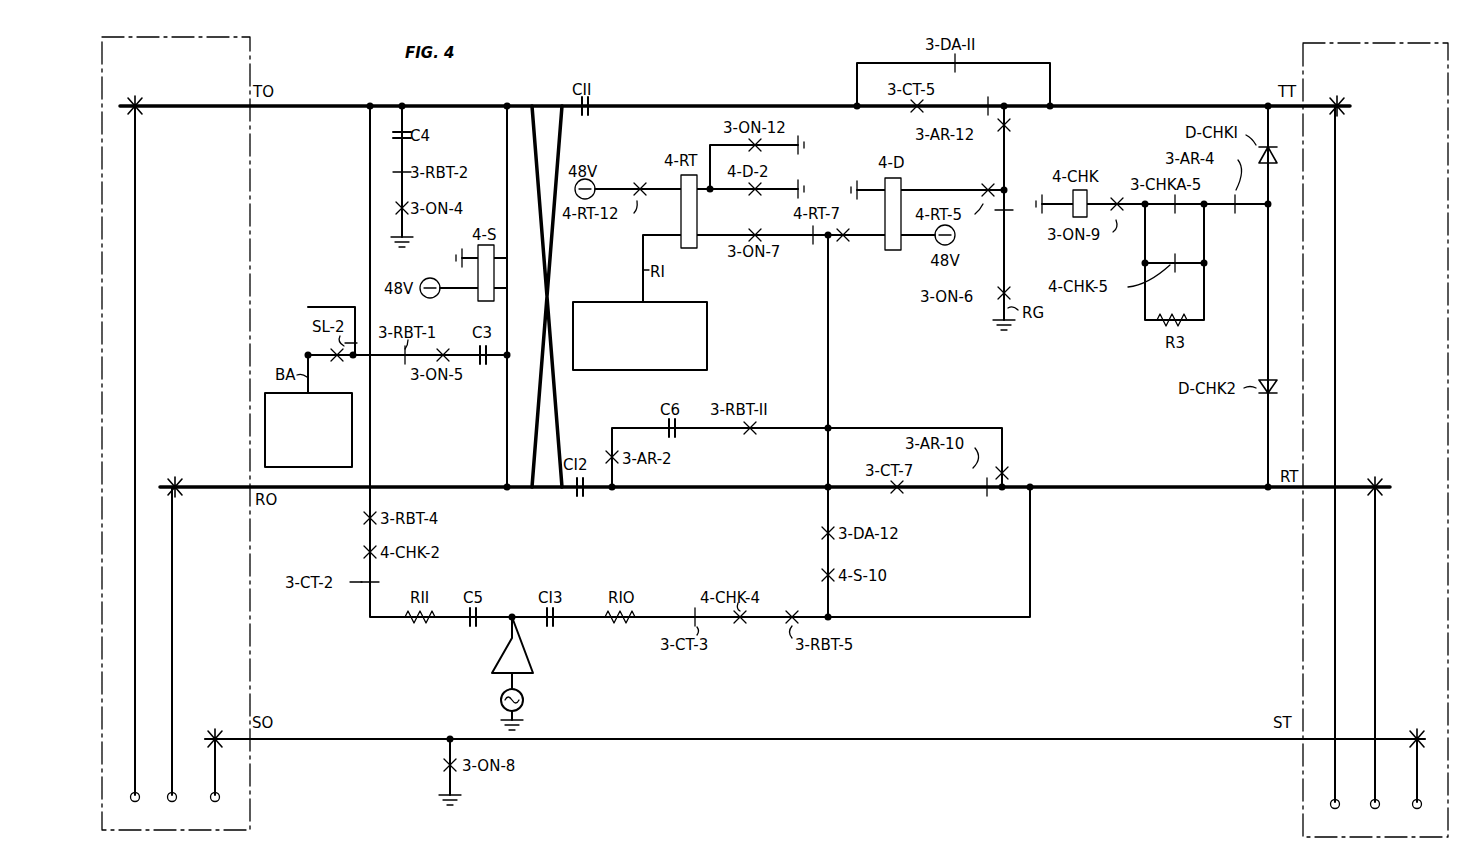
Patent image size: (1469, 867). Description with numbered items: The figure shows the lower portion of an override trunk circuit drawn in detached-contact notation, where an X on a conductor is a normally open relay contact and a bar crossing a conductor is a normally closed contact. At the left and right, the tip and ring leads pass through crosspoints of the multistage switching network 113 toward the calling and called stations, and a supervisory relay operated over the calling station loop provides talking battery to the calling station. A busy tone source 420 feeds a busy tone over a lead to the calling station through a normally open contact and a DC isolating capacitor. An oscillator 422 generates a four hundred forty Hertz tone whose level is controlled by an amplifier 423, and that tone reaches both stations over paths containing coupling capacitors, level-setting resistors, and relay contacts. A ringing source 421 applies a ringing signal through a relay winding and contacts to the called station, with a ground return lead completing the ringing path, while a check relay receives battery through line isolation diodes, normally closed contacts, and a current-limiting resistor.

The multistage switching network 113 is at (250, 44).
The busy tone source 420 is at (326, 393).
The ringing source 421 is at (620, 302).
The oscillator 422 is at (528, 703).
The amplifier 423 is at (535, 660).